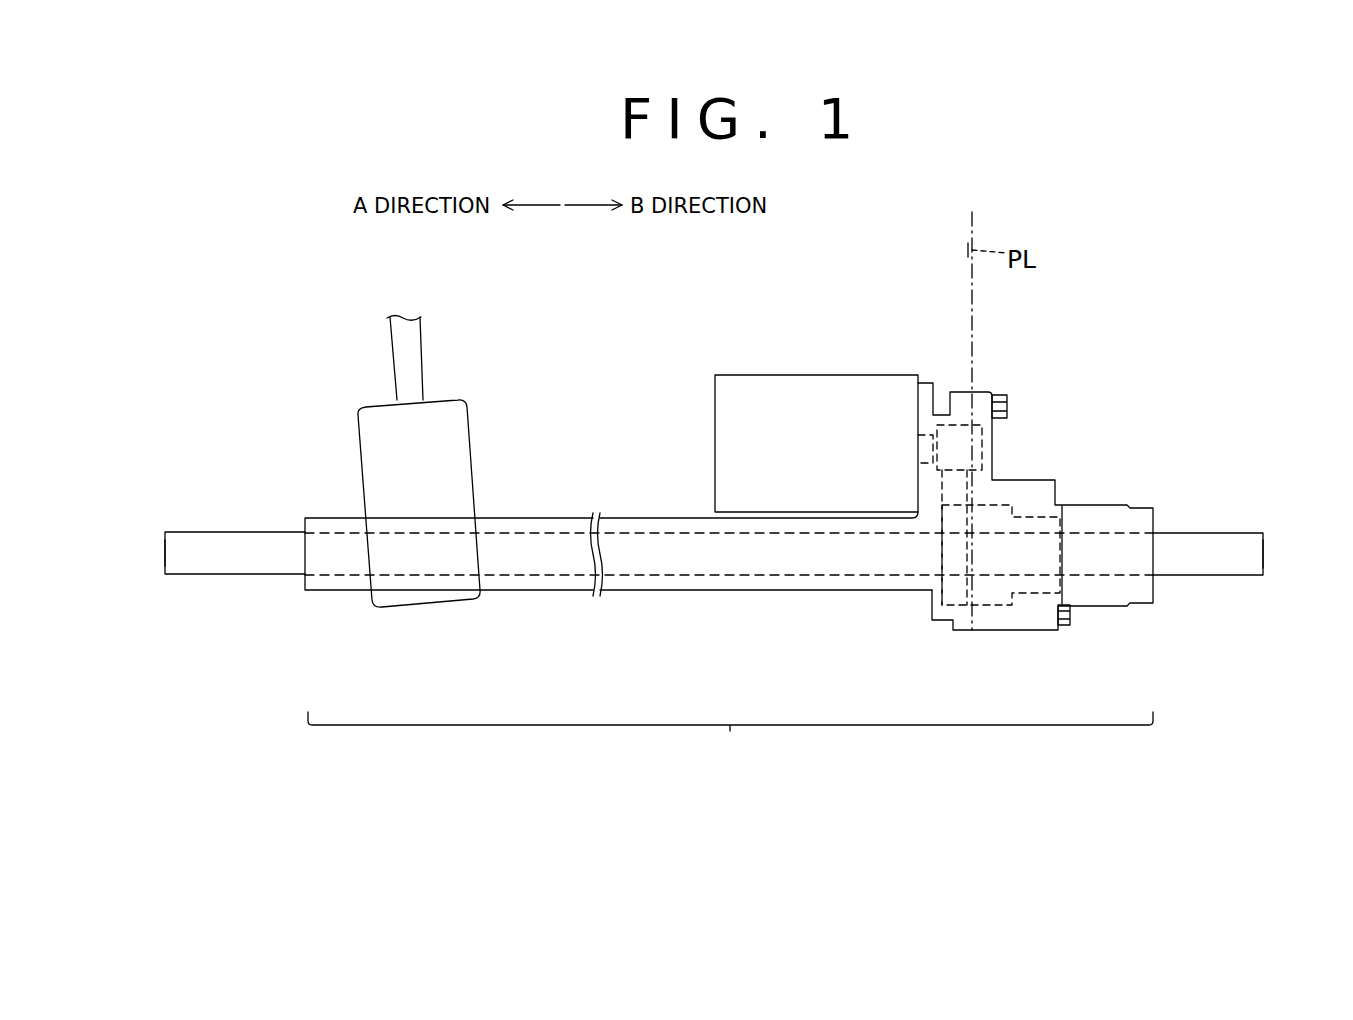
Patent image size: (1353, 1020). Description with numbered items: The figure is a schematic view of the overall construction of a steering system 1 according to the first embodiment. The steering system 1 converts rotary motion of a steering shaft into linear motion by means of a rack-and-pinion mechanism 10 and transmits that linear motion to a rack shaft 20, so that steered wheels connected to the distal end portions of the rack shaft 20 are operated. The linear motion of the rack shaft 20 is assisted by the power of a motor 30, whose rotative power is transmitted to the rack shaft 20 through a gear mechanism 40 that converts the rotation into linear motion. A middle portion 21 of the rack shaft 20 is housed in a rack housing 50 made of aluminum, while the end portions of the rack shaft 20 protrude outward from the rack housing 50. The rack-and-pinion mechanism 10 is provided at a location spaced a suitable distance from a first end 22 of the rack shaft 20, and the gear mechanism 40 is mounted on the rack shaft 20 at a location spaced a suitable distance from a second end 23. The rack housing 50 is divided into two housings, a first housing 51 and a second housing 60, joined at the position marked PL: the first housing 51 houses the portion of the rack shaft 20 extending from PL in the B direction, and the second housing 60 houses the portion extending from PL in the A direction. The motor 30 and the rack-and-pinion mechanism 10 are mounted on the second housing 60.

The steering system 1 is at (1118, 351).
The rack-and-pinion mechanism 10 is at (467, 433).
The rack shaft 20 is at (1218, 526).
The middle portion 21 is at (730, 736).
The first end 22 is at (165, 567).
The second end 23 is at (1263, 567).
The motor 30 is at (817, 375).
The gear mechanism 40 is at (1034, 493).
The rack housing 50 is at (556, 604).
The first housing 51 is at (1100, 607).
The second housing 60 is at (678, 592).